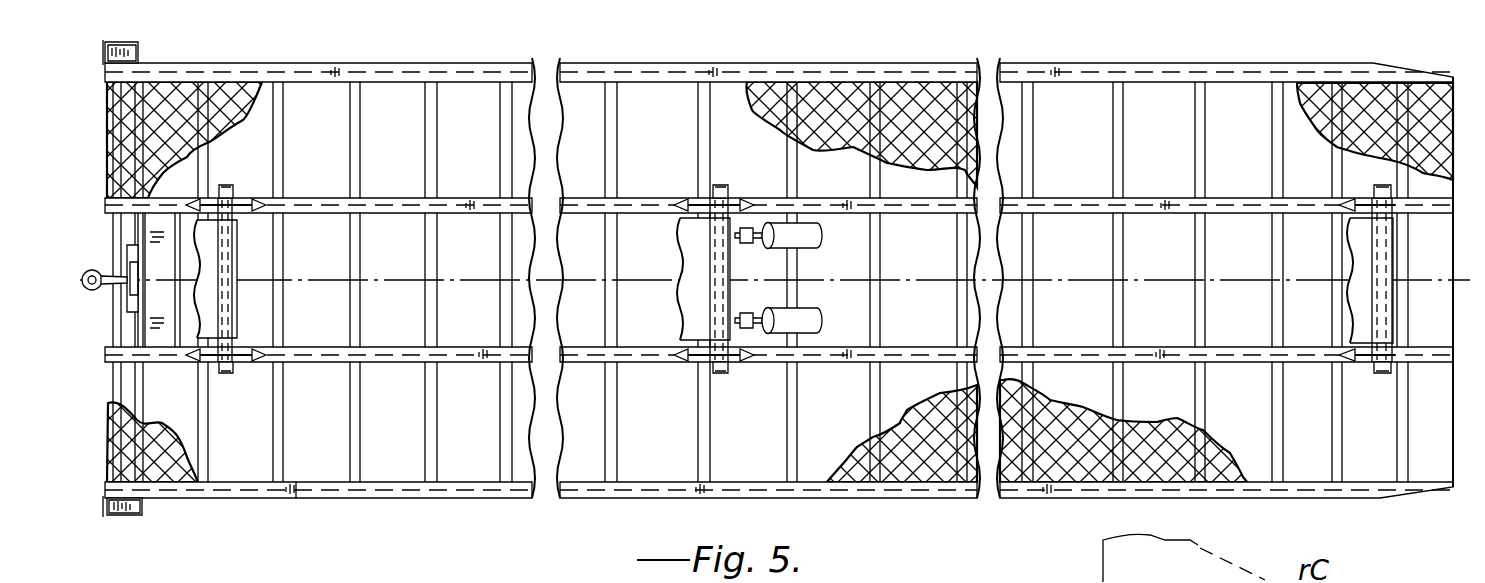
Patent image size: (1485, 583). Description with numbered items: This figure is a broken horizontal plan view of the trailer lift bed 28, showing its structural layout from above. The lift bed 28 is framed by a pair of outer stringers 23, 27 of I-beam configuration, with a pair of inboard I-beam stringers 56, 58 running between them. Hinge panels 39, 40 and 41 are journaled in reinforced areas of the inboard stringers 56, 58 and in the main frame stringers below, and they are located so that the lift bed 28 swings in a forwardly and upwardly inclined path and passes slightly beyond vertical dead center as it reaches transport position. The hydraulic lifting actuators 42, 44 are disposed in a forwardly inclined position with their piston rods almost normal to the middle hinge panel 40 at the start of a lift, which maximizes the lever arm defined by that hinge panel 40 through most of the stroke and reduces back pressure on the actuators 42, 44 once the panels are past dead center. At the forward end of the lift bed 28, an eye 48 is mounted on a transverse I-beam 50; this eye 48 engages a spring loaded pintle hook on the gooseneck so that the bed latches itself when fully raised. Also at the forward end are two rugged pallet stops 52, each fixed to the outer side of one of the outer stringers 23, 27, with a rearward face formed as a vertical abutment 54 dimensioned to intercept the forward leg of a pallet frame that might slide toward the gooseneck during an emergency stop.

The outer stringer 23 is at (297, 499).
The outer stringer 27 is at (308, 63).
The lift bed 28 is at (372, 499).
The hinge panel 39 is at (236, 266).
The middle hinge panel 40 is at (682, 258).
The hinge panel 41 is at (1350, 256).
The hydraulic lifting actuator 42 is at (822, 318).
The hydraulic lifting actuator 44 is at (822, 234).
The eye 48 is at (101, 270).
The transverse I-beam 50 is at (140, 320).
The pallet stop 52 is at (138, 43).
The vertical abutment 54 is at (142, 53).
The inboard I-beam stringer 56 is at (371, 363).
The inboard I-beam stringer 58 is at (374, 198).